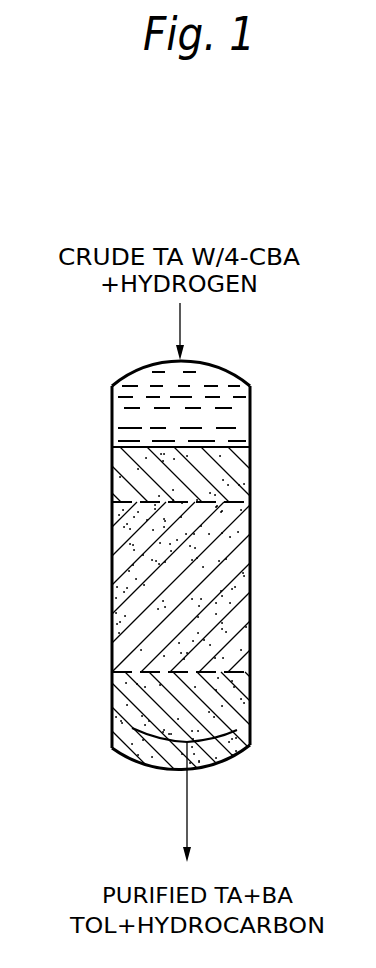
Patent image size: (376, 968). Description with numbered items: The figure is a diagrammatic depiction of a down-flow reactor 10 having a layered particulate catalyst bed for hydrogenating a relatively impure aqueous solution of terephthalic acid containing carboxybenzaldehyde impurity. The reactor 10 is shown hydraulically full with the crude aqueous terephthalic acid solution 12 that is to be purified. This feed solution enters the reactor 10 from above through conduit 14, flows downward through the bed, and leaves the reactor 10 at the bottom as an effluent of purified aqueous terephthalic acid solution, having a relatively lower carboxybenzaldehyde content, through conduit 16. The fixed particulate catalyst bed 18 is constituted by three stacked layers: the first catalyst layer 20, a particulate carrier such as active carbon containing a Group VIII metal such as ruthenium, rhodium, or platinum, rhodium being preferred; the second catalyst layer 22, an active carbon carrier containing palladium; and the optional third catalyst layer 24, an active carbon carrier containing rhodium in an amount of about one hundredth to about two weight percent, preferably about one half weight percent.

The down-flow reactor 10 is at (92, 403).
The crude aqueous terephthalic acid solution 12 is at (222, 419).
The conduit 14 is at (182, 328).
The conduit 16 is at (186, 805).
The fixed particulate catalyst bed 18 is at (182, 618).
The first catalyst layer 20 is at (233, 473).
The second catalyst layer 22 is at (228, 621).
The third catalyst layer 24 is at (237, 705).